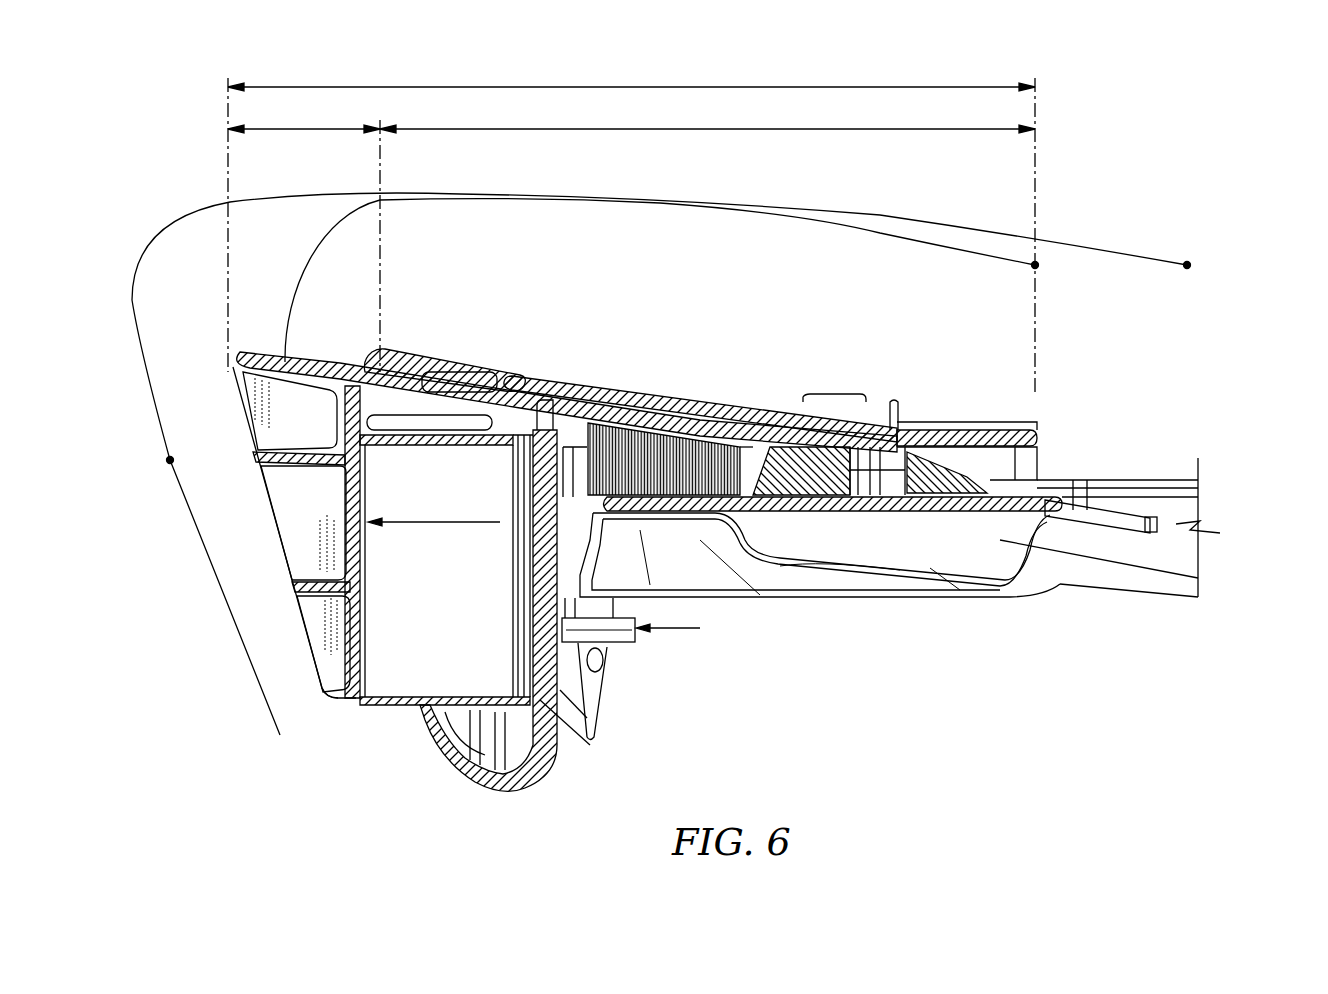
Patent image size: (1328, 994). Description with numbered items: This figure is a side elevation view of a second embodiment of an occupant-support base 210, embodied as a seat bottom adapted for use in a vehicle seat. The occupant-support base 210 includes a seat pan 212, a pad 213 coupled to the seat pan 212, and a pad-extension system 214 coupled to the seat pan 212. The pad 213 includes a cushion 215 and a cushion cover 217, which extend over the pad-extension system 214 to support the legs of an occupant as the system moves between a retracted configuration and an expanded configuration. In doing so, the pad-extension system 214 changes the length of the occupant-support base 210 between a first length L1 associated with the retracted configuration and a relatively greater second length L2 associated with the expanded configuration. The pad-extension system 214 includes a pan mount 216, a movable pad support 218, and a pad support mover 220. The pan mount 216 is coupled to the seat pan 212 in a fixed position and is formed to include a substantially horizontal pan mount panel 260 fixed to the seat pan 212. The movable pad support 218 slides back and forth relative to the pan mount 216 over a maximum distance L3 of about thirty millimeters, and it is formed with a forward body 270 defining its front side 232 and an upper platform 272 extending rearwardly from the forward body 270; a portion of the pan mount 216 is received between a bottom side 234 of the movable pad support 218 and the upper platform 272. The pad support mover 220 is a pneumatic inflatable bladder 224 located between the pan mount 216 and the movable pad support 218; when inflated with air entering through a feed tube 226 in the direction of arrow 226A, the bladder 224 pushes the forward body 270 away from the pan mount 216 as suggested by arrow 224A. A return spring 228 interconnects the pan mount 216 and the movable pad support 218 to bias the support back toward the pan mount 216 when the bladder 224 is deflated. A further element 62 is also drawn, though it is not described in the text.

The occupant-support base 210 is at (136, 196).
The seat pan 212 is at (1147, 570).
The pad 213 is at (1222, 287).
The pad-extension system 214 is at (598, 326).
The cushion 215 is at (1012, 327).
The pan mount 216 is at (602, 697).
The cushion cover 217 is at (1075, 240).
The movable pad support 218 is at (616, 388).
The pad support mover 220 is at (387, 700).
The pneumatic inflatable bladder 224 is at (458, 669).
The arrow 224A is at (495, 520).
The feed tube 226 is at (622, 645).
The arrow 226A is at (700, 628).
The return spring 228 is at (703, 410).
The front side 232 is at (290, 590).
The bottom side 234 is at (350, 700).
The pan mount panel 260 is at (1053, 503).
The forward body 270 is at (380, 368).
The upper platform 272 is at (302, 355).
The clip 62 is at (585, 727).
The first length L1 is at (725, 131).
The second length L2 is at (580, 88).
The maximum distance L3 is at (288, 131).